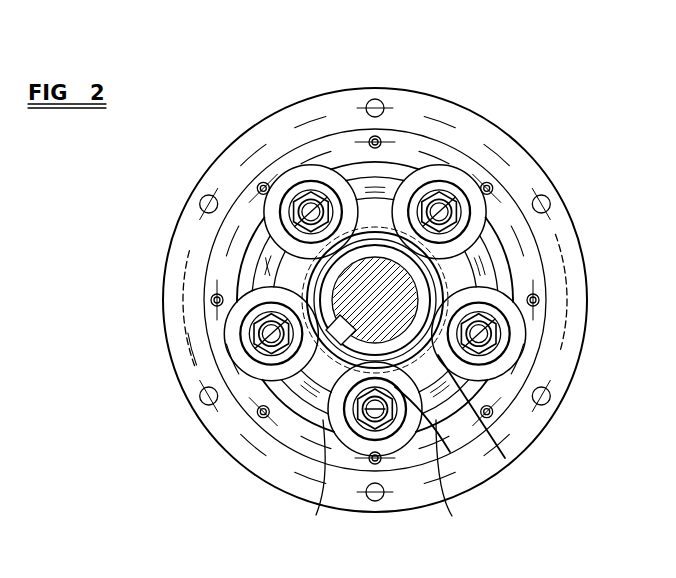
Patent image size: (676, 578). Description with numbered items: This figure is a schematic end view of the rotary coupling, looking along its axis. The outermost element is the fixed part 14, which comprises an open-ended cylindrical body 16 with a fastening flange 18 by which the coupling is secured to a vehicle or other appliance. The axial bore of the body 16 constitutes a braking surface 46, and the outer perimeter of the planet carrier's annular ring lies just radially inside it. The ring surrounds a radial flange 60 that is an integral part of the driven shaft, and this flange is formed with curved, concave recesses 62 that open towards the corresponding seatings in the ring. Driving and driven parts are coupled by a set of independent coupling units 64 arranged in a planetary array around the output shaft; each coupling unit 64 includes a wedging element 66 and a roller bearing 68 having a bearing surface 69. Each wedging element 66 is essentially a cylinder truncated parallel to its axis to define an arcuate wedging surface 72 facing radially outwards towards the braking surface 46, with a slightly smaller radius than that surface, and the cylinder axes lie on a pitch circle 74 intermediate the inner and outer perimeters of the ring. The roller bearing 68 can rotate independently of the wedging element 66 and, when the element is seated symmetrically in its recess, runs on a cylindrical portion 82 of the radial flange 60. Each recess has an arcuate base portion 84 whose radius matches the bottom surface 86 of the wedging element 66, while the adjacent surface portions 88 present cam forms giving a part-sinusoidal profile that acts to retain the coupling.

The fixed part 14 is at (330, 118).
The cylindrical body 16 is at (273, 143).
The fastening flange 18 is at (232, 136).
The braking surface 46 is at (250, 205).
The radial flange 60 is at (565, 287).
The recesses 62 is at (468, 243).
The coupling units 64 is at (316, 515).
The wedging element 66 is at (452, 516).
The roller bearing 68 is at (398, 422).
The bearing surface 69 is at (352, 422).
The wedging surface 72 is at (240, 338).
The pitch circle 74 is at (606, 380).
The cylindrical portion 82 is at (224, 232).
The base portion 84 is at (183, 275).
The bottom surface 86 is at (342, 362).
The surface portions 88 is at (322, 380).